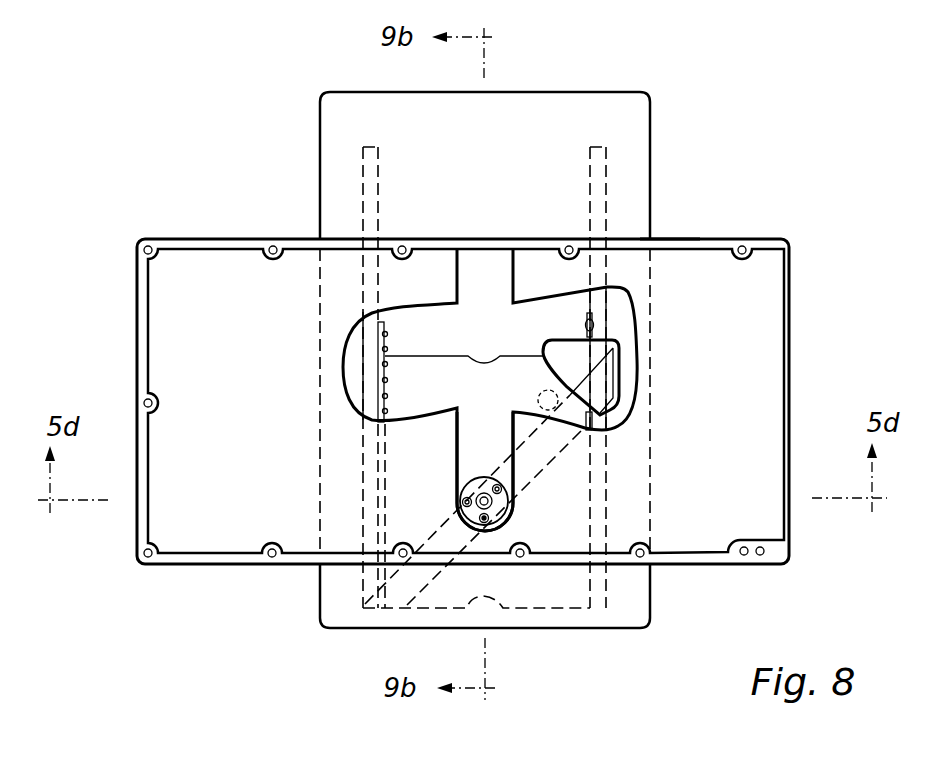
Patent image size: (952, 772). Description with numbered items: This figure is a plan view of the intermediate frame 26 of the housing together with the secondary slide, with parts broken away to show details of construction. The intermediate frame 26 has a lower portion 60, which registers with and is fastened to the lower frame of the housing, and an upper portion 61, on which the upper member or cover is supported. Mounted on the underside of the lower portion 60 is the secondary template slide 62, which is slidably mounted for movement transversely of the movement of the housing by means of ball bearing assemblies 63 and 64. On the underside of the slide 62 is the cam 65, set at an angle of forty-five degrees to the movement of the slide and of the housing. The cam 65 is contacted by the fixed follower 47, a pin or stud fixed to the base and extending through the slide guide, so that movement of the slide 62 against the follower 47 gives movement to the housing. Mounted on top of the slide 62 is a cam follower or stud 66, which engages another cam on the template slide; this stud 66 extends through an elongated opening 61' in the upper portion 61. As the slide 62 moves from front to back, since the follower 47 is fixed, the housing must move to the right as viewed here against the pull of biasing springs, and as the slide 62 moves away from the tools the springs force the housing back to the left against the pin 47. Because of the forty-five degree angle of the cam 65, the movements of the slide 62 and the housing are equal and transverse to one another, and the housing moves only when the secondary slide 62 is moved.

The intermediate frame 26 is at (667, 238).
The cam follower pin 47 is at (538, 396).
The lower portion of intermediate frame 60 is at (607, 618).
The upper portion of intermediate frame 61 is at (463, 373).
The elongated opening 61' is at (457, 471).
The secondary template slide 62 is at (445, 356).
The ball bearing assembly 63 is at (386, 333).
The ball bearing assembly 64 is at (585, 323).
The cam 65 is at (602, 382).
The cam follower stud 66 is at (484, 493).